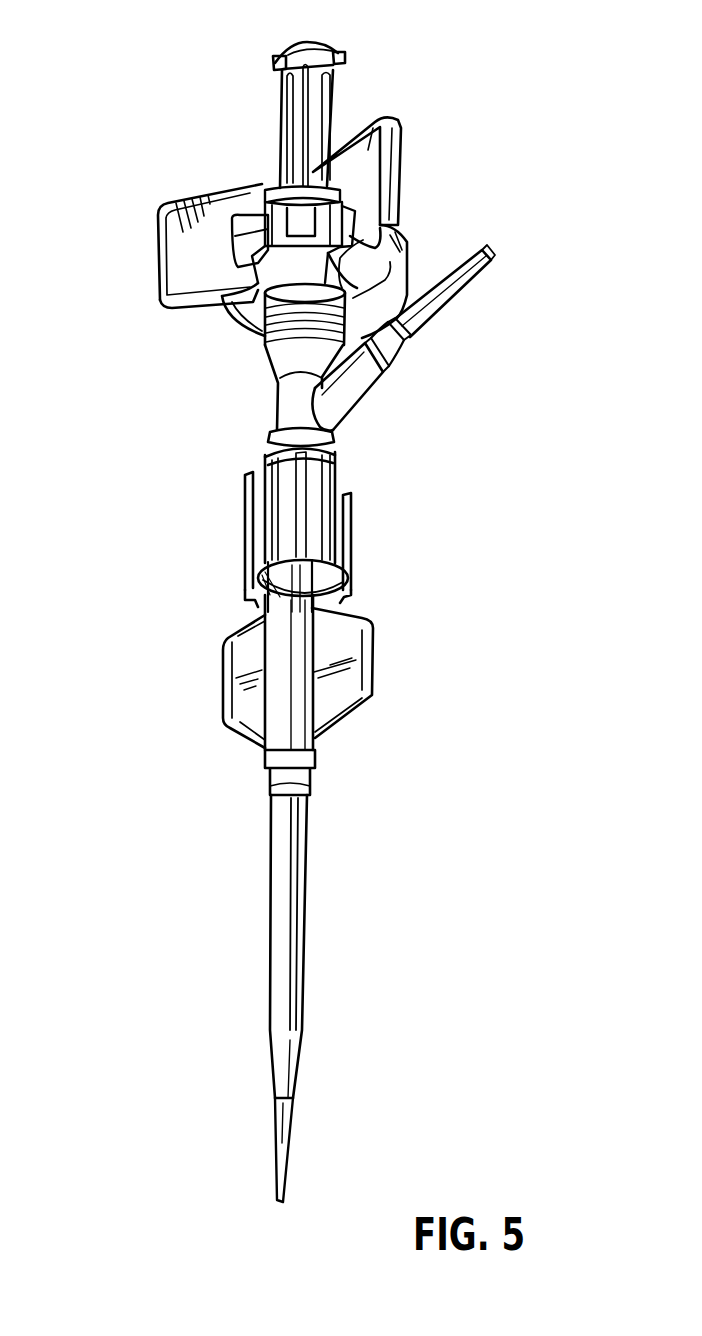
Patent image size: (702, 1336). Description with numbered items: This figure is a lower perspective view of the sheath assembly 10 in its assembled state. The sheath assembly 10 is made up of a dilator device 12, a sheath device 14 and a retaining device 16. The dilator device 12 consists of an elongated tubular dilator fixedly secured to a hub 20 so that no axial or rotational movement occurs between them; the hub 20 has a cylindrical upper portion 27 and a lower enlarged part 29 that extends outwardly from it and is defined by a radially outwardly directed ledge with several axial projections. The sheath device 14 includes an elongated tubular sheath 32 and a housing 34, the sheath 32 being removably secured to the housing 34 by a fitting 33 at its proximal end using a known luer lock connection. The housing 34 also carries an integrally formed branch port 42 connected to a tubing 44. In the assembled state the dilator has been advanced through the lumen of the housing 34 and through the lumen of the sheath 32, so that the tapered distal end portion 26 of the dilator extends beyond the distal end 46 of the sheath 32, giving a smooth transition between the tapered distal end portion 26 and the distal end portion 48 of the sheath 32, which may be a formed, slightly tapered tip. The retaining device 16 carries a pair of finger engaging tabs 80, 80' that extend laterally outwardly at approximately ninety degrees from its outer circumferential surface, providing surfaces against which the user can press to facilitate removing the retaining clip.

The sheath assembly 10 is at (383, 497).
The dilator device 12 is at (272, 130).
The sheath device 14 is at (211, 628).
The retaining device 16 is at (418, 237).
The hub 20 is at (337, 97).
The distal end portion of the dilator 26 is at (278, 1125).
The cylindrical upper portion 27 is at (280, 88).
The lower enlarged part 29 is at (263, 185).
The elongated tubular sheath 32 is at (302, 945).
The fitting 33 is at (372, 712).
The housing 34 is at (298, 402).
The branch port 42 is at (367, 395).
The tubing 44 is at (476, 280).
The distal end of the elongated sheath 46 is at (273, 1107).
The distal end portion of the sheath 48 is at (298, 1063).
The finger engaging tab 80 is at (172, 246).
The finger engaging tab 80' is at (397, 171).